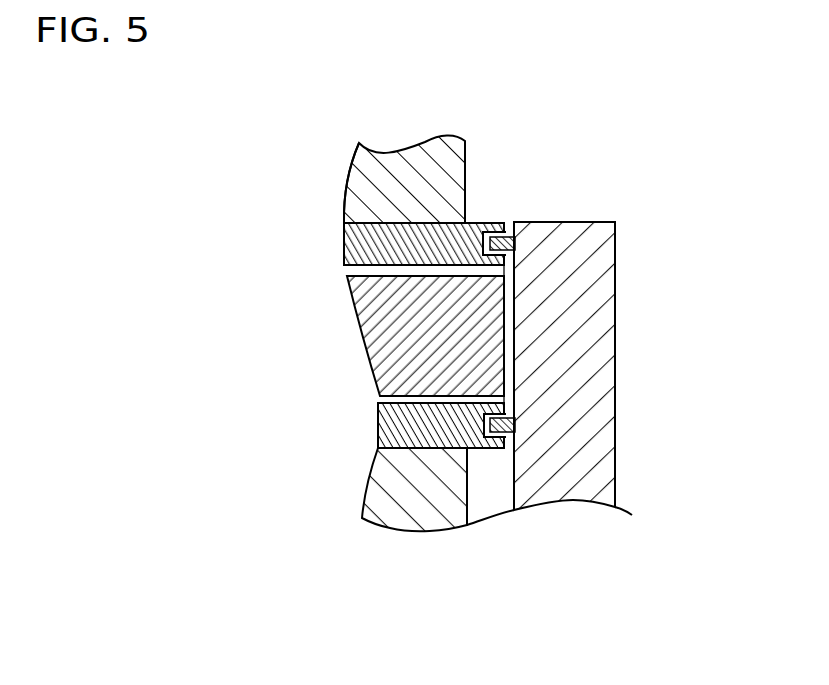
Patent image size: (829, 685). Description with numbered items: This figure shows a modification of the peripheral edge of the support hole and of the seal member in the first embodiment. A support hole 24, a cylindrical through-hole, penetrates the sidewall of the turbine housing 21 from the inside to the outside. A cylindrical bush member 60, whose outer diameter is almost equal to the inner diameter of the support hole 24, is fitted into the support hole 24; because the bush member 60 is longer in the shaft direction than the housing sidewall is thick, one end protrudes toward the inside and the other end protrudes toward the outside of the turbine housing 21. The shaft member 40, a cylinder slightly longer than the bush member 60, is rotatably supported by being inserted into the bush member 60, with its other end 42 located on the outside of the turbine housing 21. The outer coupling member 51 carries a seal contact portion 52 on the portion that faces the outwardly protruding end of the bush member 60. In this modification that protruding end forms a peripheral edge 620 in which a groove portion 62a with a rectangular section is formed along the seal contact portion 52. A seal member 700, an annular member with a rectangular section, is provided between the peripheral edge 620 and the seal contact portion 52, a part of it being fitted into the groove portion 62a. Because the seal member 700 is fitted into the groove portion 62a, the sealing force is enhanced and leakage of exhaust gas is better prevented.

The turbine housing 21 is at (400, 177).
The support hole 24 is at (373, 220).
The shaft member 40 is at (383, 322).
The other end of the shaft member 42 is at (520, 343).
The outer coupling member 51 is at (597, 490).
The seal contact portion 52 is at (520, 247).
The bush member 60 is at (356, 245).
The groove portion 62a is at (485, 225).
The peripheral edge 620 is at (505, 200).
The seal member 700 is at (500, 221).